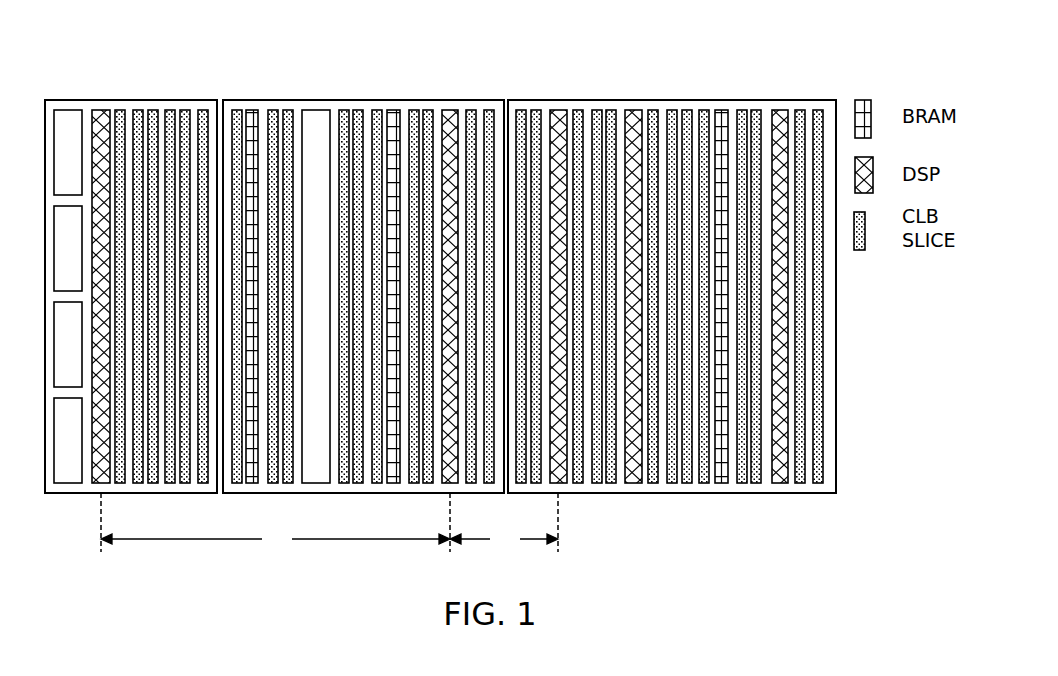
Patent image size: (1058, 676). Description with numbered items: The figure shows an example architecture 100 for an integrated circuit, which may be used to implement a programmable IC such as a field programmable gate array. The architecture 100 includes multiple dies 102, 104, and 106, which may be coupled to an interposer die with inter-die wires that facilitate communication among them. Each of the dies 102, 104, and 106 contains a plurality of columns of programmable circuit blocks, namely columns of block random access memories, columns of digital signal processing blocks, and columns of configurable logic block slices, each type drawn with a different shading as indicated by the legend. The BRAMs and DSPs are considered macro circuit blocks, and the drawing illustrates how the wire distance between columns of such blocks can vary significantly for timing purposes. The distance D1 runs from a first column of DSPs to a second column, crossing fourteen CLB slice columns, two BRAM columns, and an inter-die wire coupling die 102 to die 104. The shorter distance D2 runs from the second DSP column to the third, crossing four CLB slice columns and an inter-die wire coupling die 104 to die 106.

The architecture 100 is at (473, 35).
The die 102 is at (97, 100).
The die 104 is at (325, 100).
The die 106 is at (635, 100).
The distance D1 is at (275, 522).
The distance D2 is at (504, 522).